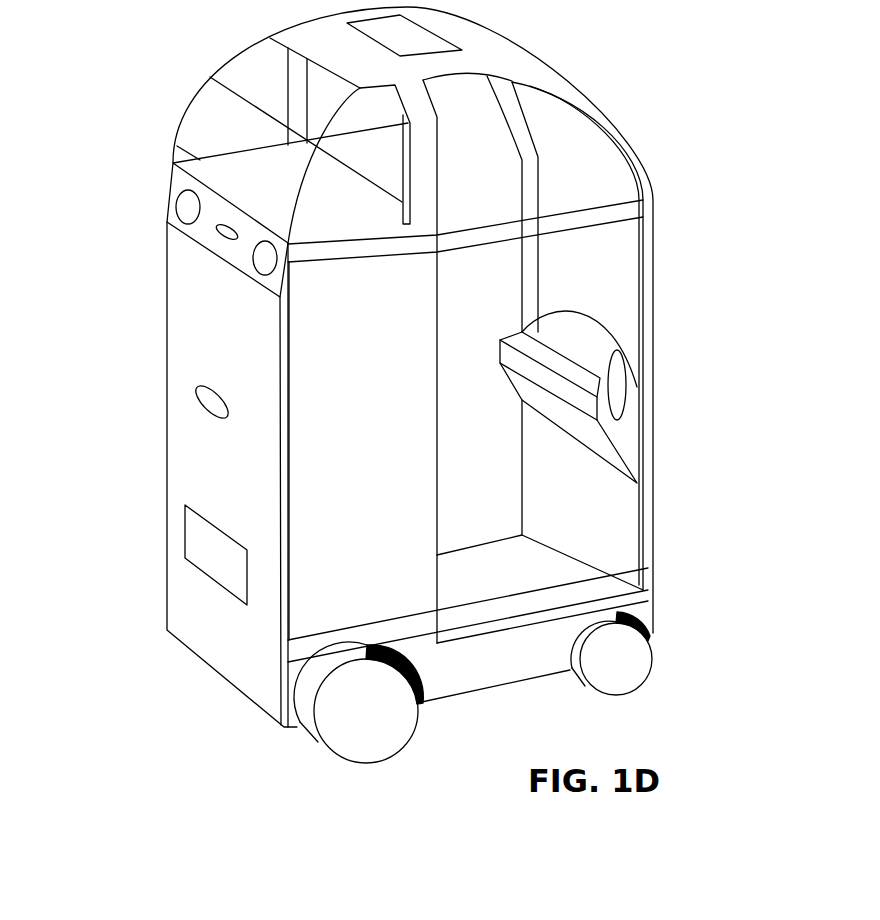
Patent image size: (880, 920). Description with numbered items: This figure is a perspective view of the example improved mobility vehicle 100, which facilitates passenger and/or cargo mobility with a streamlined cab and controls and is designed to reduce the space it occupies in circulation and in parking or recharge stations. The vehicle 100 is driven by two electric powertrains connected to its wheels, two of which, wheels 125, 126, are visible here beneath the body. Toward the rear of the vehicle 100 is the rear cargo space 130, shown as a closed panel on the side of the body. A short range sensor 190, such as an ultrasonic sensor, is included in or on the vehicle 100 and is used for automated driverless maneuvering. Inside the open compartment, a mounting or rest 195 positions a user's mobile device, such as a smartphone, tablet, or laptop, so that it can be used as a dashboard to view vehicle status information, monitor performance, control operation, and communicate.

The vehicle 100 is at (637, 140).
The wheel 125 is at (405, 745).
The wheel 126 is at (590, 690).
The rear cargo space 130 is at (376, 436).
The short range sensor 190 is at (212, 407).
The mounting or rest 195 is at (560, 367).